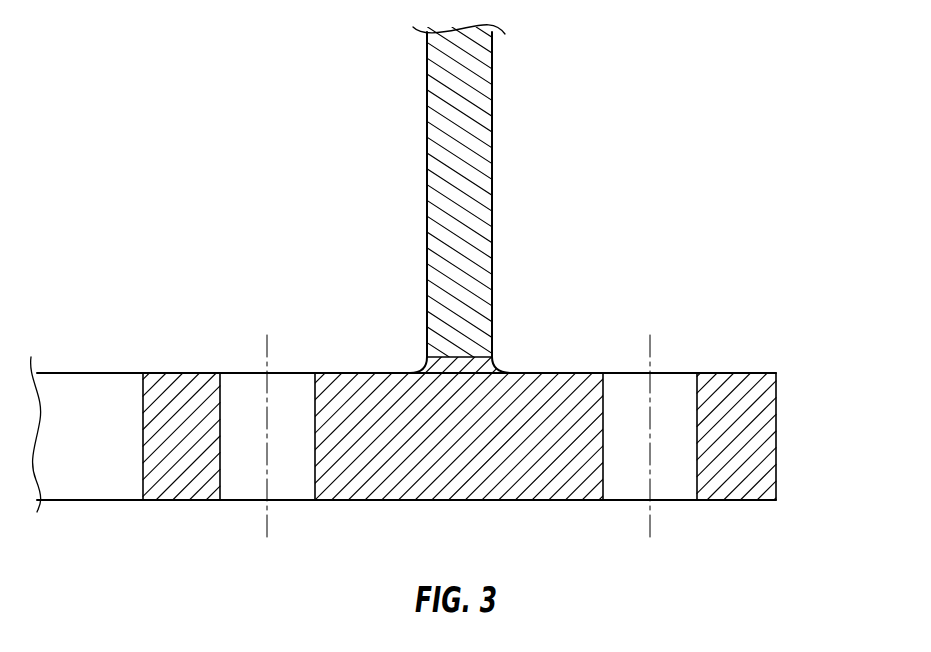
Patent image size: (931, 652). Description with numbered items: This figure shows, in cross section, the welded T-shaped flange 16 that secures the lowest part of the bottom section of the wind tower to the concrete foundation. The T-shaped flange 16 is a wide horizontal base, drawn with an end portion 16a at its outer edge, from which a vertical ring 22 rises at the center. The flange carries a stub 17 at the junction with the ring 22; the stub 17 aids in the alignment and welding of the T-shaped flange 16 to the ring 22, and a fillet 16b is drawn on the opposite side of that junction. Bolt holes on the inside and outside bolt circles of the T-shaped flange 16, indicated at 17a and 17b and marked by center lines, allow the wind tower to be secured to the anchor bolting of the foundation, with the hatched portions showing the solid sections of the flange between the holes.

The T-shaped flange 16 is at (465, 500).
The end portion of base plate 16a is at (776, 436).
The fillet 16b is at (417, 371).
The stub 17 is at (500, 371).
The hole in base plate 17a is at (245, 490).
The hole in base plate 17b is at (675, 490).
The ring 22 is at (492, 132).